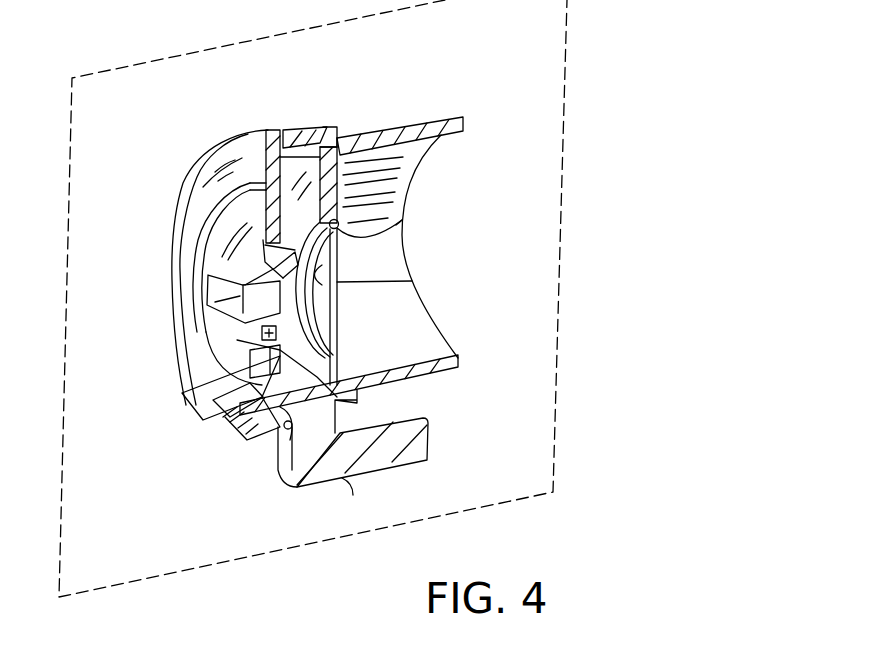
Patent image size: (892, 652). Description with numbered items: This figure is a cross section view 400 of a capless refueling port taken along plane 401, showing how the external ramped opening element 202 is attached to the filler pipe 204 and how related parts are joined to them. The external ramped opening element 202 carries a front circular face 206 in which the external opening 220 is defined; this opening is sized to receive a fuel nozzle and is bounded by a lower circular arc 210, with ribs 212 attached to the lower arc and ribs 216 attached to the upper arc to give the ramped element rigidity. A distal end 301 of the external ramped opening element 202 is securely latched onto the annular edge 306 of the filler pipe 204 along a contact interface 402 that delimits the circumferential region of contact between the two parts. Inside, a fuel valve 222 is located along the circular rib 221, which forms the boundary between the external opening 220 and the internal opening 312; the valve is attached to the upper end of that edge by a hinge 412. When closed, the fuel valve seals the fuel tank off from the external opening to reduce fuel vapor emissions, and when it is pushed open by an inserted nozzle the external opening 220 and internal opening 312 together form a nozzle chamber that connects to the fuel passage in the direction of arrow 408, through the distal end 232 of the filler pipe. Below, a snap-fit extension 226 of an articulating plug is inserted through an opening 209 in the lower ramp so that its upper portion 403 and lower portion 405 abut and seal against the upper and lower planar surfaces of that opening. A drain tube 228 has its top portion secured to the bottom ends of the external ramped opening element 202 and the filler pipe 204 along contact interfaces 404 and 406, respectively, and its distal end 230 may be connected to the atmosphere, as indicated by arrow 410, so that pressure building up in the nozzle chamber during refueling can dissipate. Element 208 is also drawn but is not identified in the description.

The cross section view 400 is at (201, 128).
The plane 401 is at (557, 345).
The external ramped opening element 202 is at (270, 130).
The filler pipe 204 is at (420, 125).
The front circular face 206 is at (248, 213).
The latch member 208 is at (228, 377).
The opening 209 is at (197, 408).
The lower circular arc 210 is at (257, 347).
The ribs 212 is at (206, 286).
The ribs 216 is at (270, 277).
The external opening 220 is at (258, 335).
The circular rib 221 is at (303, 328).
The fuel valve 222 is at (412, 281).
The snap-fit extension 226 is at (210, 375).
The drain tube 228 is at (353, 495).
The distal end of the drain tube 230 is at (440, 425).
The distal end of the filler pipe 232 is at (440, 333).
The distal end of the external ramped opening element 301 is at (313, 127).
The annular edge 306 is at (287, 128).
The internal opening 312 is at (390, 267).
The contact interface 402 is at (330, 147).
The upper portion 403 is at (303, 357).
The contact interface 404 is at (300, 453).
The lower portion 405 is at (280, 430).
The contact interface 406 is at (332, 407).
The arrow 408 is at (513, 244).
The arrow 410 is at (482, 429).
The hinge 412 is at (402, 220).